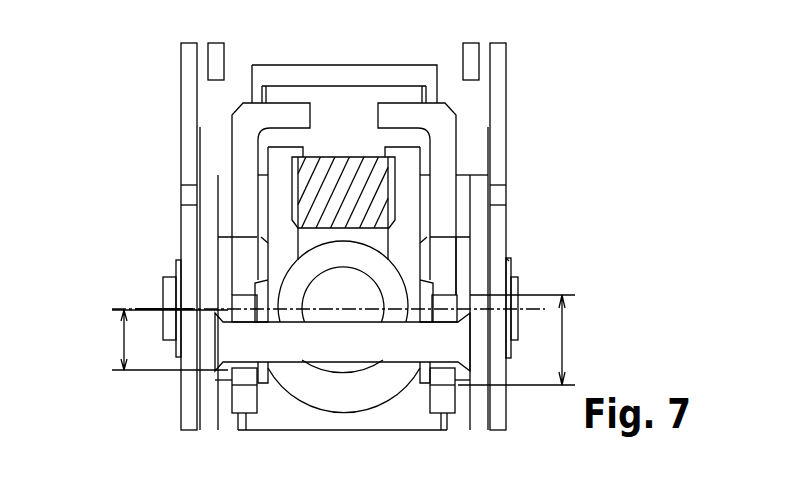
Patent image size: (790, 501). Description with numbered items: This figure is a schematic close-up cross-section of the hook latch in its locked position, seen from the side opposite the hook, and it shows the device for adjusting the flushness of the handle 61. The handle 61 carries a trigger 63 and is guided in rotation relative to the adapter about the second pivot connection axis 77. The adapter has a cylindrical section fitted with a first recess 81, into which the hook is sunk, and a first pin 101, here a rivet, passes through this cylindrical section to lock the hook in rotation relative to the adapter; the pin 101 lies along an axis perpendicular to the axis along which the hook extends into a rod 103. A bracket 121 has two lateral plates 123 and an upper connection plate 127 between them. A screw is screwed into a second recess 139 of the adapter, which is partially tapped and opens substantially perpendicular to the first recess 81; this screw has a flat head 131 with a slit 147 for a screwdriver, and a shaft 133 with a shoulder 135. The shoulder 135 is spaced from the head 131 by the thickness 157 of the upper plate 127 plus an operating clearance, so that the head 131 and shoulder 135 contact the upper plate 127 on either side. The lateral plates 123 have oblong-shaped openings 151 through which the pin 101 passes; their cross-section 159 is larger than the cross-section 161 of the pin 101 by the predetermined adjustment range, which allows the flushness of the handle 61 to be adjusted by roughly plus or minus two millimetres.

The handle 61 is at (190, 78).
The trigger 63 is at (217, 60).
The second pivot connection axis 77 is at (147, 308).
The first recess 81 is at (390, 283).
The first pin 101 is at (400, 338).
The rod 103 is at (355, 312).
The bracket 121 is at (443, 247).
The lateral plates 123 is at (440, 400).
The upper connection plate 127 is at (298, 117).
The head 131 is at (288, 63).
The shaft 133 is at (370, 198).
The shoulder 135 is at (412, 137).
The second recess 139 is at (332, 236).
The slit 147 is at (397, 75).
The oblong-shaped openings 151 is at (247, 300).
The thickness 157 is at (240, 90).
The cross-section 159 is at (565, 342).
The cross-section 161 is at (118, 340).